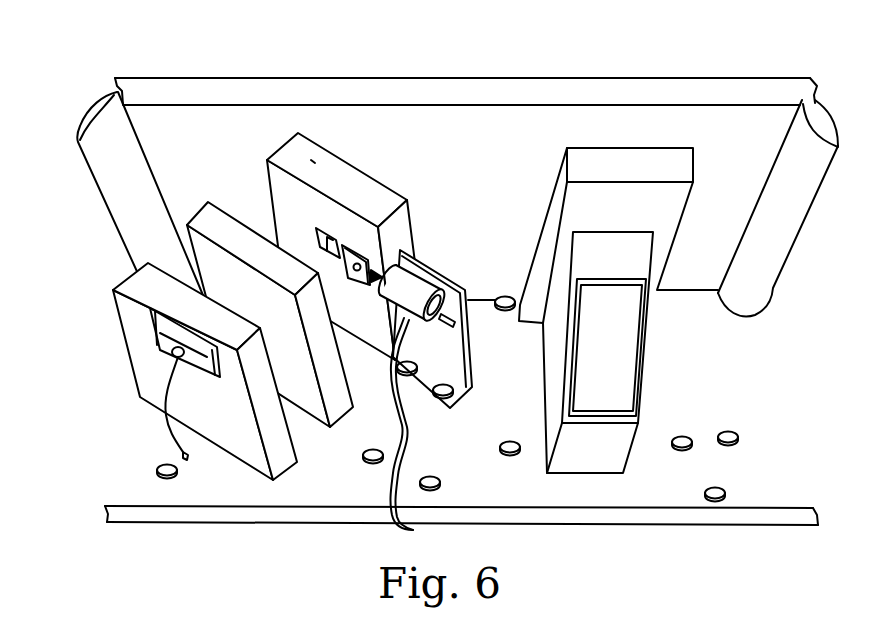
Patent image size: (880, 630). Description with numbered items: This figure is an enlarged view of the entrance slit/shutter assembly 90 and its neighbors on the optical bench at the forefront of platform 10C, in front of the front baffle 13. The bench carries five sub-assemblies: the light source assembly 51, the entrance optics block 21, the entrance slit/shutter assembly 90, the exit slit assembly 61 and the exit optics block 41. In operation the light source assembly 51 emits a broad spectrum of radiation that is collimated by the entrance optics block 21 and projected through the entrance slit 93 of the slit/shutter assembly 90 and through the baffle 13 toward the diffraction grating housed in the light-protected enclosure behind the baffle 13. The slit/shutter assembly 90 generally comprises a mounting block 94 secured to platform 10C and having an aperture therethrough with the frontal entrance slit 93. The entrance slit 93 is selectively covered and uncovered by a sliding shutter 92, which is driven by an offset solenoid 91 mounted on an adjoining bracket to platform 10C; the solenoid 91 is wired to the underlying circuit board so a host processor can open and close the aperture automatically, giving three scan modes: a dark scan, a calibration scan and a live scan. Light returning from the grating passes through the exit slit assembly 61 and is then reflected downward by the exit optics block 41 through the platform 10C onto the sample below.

The platform section 10C is at (736, 407).
The front baffle 13 is at (211, 167).
The entrance optics block 21 is at (165, 241).
The exit optics block 41 is at (672, 355).
The light source assembly 51 is at (116, 336).
The exit slit assembly 61 is at (692, 195).
The entrance slit/shutter assembly 90 is at (290, 127).
The solenoid 91 is at (427, 262).
The sliding shutter 92 is at (356, 243).
The entrance slit 93 is at (327, 228).
The mounting block 94 is at (312, 162).